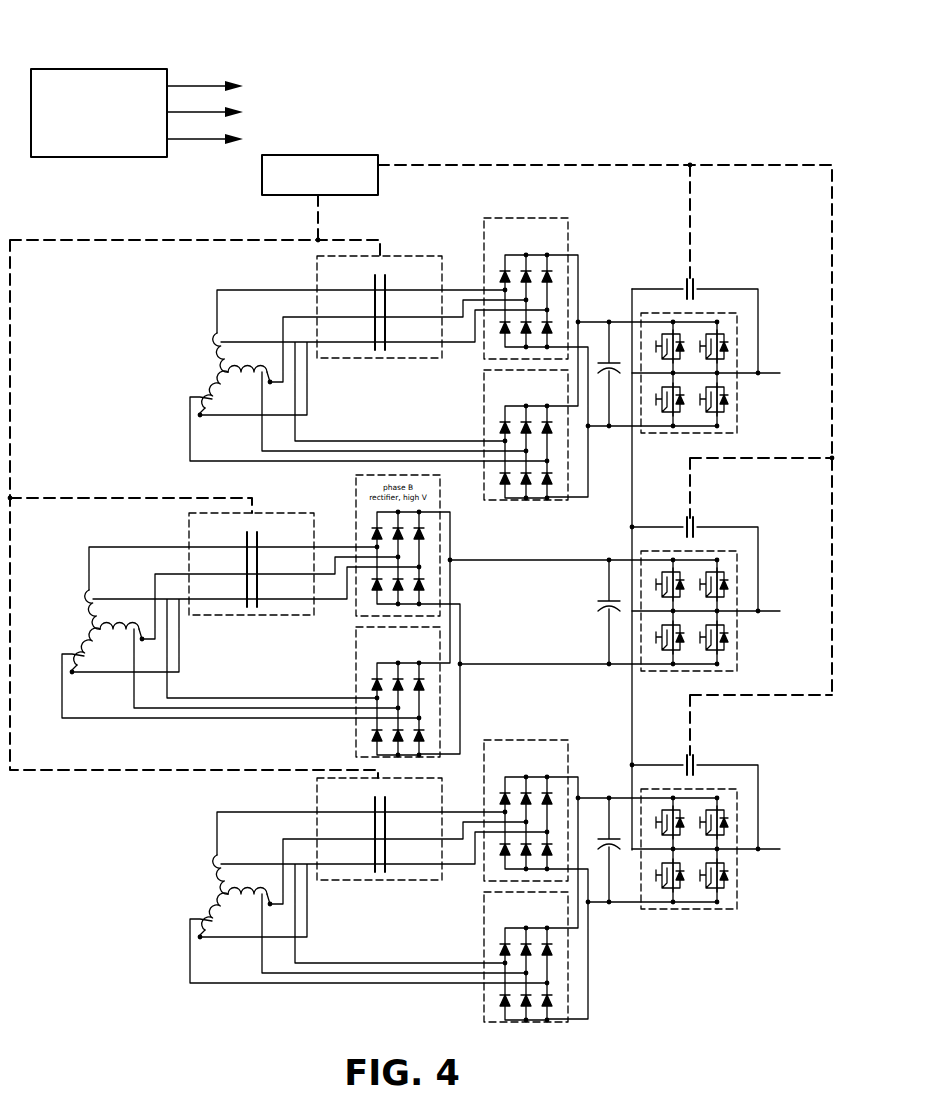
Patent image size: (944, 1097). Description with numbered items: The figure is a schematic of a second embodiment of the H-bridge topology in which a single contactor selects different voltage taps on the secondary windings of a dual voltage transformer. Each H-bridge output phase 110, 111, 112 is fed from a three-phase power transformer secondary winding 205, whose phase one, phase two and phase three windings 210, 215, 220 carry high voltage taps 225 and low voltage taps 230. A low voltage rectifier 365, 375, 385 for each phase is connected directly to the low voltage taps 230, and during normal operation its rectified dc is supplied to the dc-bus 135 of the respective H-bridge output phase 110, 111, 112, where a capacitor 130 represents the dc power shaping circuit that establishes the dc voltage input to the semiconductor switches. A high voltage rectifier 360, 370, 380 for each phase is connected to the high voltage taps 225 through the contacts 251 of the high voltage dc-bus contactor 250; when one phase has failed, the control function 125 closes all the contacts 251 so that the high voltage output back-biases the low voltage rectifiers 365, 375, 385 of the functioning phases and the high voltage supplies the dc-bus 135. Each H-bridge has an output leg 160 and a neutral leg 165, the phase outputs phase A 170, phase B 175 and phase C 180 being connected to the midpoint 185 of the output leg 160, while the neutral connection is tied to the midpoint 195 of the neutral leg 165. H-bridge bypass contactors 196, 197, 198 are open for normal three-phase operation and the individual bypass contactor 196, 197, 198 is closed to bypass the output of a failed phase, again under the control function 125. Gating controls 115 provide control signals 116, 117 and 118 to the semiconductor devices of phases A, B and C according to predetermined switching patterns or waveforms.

The H-bridge output phase 110 is at (740, 312).
The H-bridge output phase 111 is at (740, 550).
The H-bridge output phase 112 is at (740, 788).
The gating controls 115 is at (98, 67).
The control signal 116 is at (190, 85).
The control signal 117 is at (204, 110).
The control signal 118 is at (202, 142).
The control function 125 is at (352, 154).
The capacitor 130 is at (600, 362).
The dc-bus 135 is at (615, 320).
The output leg 160 is at (733, 358).
The neutral leg 165 is at (647, 372).
The phase A 170 is at (775, 372).
The phase B 175 is at (775, 610).
The phase C 180 is at (775, 848).
The midpoint 185 is at (720, 375).
The midpoint 195 is at (658, 392).
The H-bridge bypass contactor 196 is at (690, 288).
The H-bridge bypass contactor 197 is at (690, 526).
The H-bridge bypass contactor 198 is at (690, 764).
The three-phase power transformer secondary winding 205 is at (142, 641).
The phase 1 transformer secondary winding 210 is at (228, 350).
The phase 2 transformer secondary winding 215 is at (242, 380).
The phase 3 transformer secondary winding 220 is at (225, 400).
The high voltage taps 225 is at (216, 333).
The low voltage taps 230 is at (222, 336).
The high voltage dc-bus contactor 250 is at (400, 254).
The contacts 251 is at (337, 599).
The high voltage rectifier 360 is at (566, 240).
The low voltage rectifier 365 is at (578, 510).
The high voltage rectifier 370 is at (482, 502).
The low voltage rectifier 375 is at (356, 736).
The high voltage rectifier 380 is at (568, 740).
The low voltage rectifier 385 is at (483, 1000).